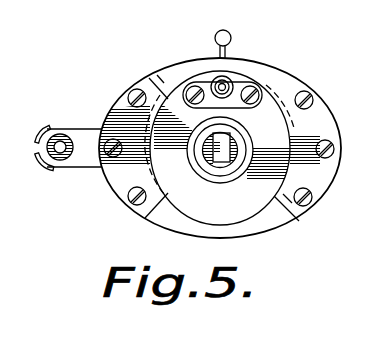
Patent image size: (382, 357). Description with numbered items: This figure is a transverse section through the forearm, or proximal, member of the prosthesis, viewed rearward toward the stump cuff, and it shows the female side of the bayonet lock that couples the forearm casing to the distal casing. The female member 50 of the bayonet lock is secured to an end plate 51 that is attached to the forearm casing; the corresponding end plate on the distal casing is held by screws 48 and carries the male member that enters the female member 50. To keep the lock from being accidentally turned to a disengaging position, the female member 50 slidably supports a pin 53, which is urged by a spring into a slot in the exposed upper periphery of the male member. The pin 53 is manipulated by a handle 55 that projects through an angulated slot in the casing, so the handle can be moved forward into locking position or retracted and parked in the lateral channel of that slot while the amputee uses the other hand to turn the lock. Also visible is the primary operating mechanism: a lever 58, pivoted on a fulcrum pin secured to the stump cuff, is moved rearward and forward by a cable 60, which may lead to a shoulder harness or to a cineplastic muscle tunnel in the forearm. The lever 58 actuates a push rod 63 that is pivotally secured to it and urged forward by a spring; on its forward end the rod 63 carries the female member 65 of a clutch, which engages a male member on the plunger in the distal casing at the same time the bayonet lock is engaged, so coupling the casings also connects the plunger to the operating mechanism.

The screws 48 is at (27, 147).
The female member of the bayonet lock 50 is at (326, 182).
The end plate 51 is at (166, 224).
The pin 53 is at (223, 84).
The handle 55 is at (231, 35).
The lever 58 is at (85, 129).
The cable 60 is at (62, 140).
The push rod 63 is at (226, 160).
The female member of the clutch 65 is at (221, 150).